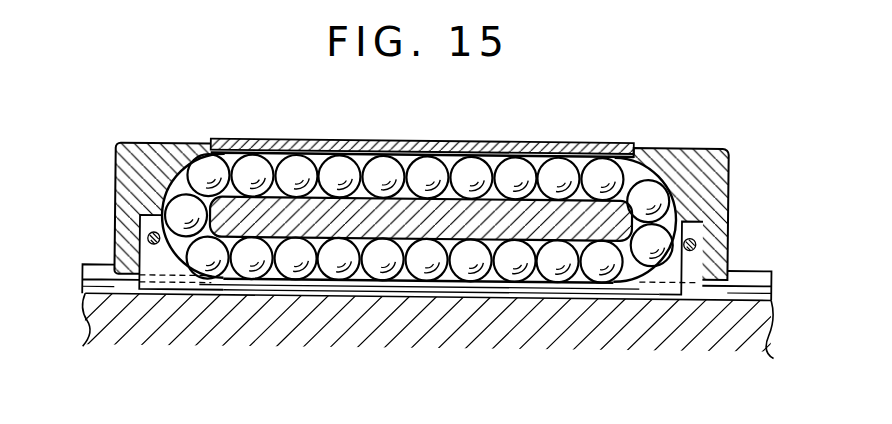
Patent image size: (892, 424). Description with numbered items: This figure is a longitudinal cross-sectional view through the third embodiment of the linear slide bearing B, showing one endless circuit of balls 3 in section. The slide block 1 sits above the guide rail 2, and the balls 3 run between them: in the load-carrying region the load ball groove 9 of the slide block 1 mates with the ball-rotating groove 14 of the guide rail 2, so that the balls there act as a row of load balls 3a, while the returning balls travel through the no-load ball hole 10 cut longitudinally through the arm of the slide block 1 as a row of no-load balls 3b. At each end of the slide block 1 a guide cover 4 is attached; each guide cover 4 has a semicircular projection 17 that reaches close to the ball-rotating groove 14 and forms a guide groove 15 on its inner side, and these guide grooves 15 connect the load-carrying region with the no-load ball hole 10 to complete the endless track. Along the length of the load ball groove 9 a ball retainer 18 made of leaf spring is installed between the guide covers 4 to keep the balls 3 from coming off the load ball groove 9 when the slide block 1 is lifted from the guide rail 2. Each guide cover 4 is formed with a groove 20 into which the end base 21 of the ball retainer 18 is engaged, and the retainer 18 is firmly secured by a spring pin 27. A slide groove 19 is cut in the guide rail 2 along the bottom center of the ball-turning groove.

The linear slide bearing B is at (414, 244).
The slide block 1 is at (353, 139).
The guide rail 2 is at (748, 266).
The balls 3 is at (418, 245).
The load balls 3a is at (326, 279).
The no-load balls 3b is at (273, 162).
The guide covers 4 is at (162, 142).
The load ball groove 9 is at (413, 225).
The no-load ball hole 10 is at (497, 153).
The ball-rotating groove 14 is at (775, 280).
The guide groove 15 is at (168, 182).
The semicircular projection 17 is at (118, 272).
The ball retainer 18 is at (408, 293).
The slide groove 19 is at (772, 298).
The groove 20 is at (140, 266).
The end base 21 is at (164, 274).
The spring pin 27 is at (149, 239).